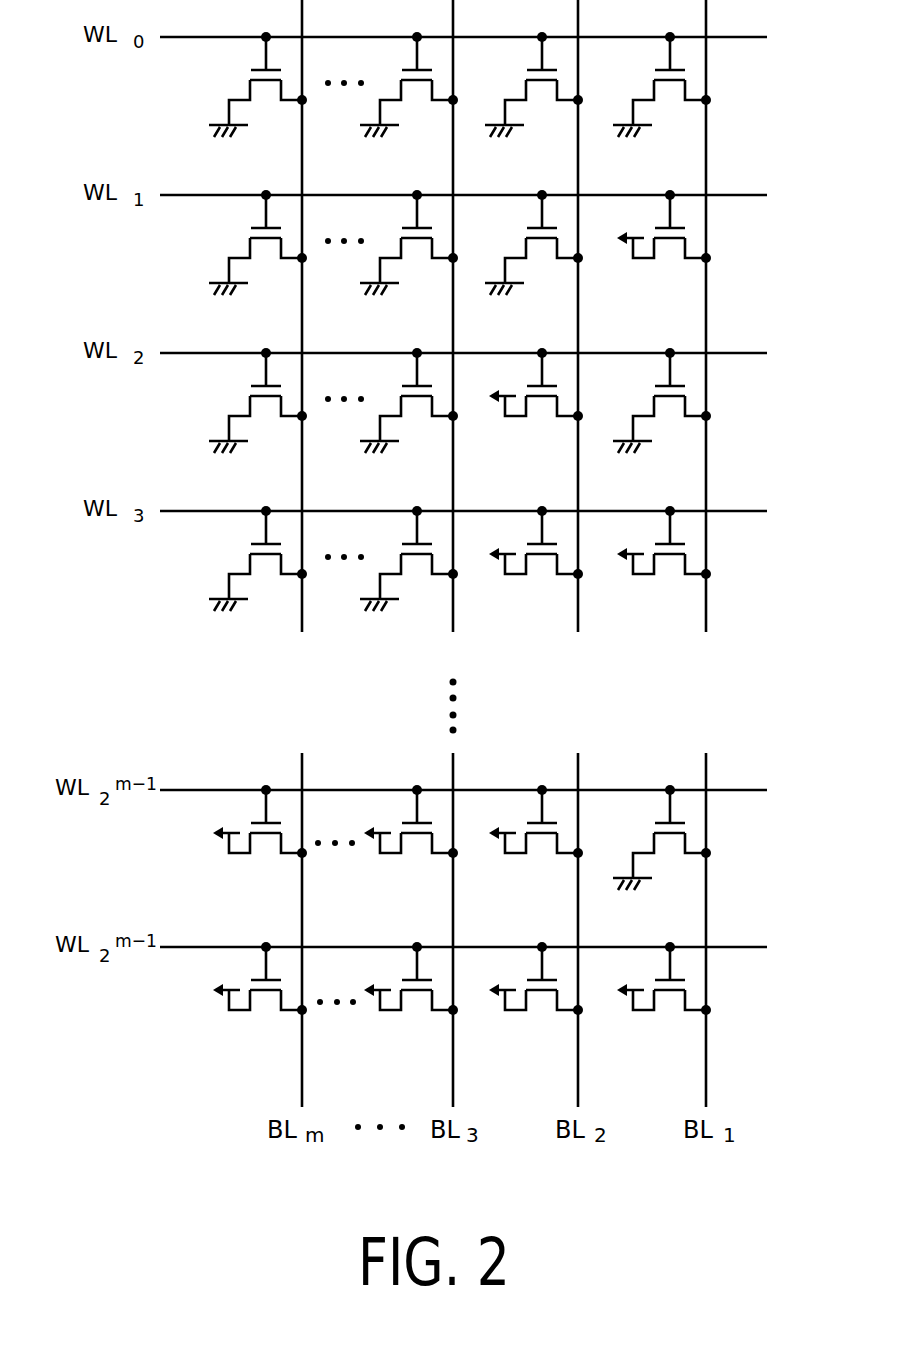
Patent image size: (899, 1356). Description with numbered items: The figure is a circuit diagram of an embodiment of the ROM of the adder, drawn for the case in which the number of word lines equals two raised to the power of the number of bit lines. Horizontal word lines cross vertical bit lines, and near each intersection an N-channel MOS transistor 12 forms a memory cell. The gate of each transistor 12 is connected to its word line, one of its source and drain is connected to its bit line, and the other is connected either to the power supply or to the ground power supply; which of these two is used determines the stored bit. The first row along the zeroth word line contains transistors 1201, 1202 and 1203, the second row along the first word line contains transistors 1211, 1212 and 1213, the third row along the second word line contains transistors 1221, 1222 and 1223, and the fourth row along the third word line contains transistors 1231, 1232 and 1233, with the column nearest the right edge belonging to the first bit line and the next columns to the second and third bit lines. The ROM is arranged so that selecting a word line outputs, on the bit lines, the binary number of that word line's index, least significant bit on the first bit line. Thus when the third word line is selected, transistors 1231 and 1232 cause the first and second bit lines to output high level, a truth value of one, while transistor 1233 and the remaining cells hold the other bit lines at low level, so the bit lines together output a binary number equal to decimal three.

The N-channel MOS transistor 12 is at (662, 108).
The N-channel MOS transistor 1201 is at (662, 108).
The N-channel MOS transistor 1202 is at (534, 108).
The N-channel MOS transistor 1203 is at (409, 108).
The N-channel MOS transistor 1211 is at (654, 266).
The N-channel MOS transistor 1212 is at (534, 266).
The N-channel MOS transistor 1213 is at (409, 266).
The N-channel MOS transistor 1221 is at (662, 424).
The N-channel MOS transistor 1222 is at (526, 424).
The N-channel MOS transistor 1223 is at (409, 424).
The N-channel MOS transistor 1231 is at (654, 582).
The N-channel MOS transistor 1232 is at (526, 582).
The N-channel MOS transistor 1233 is at (409, 582).